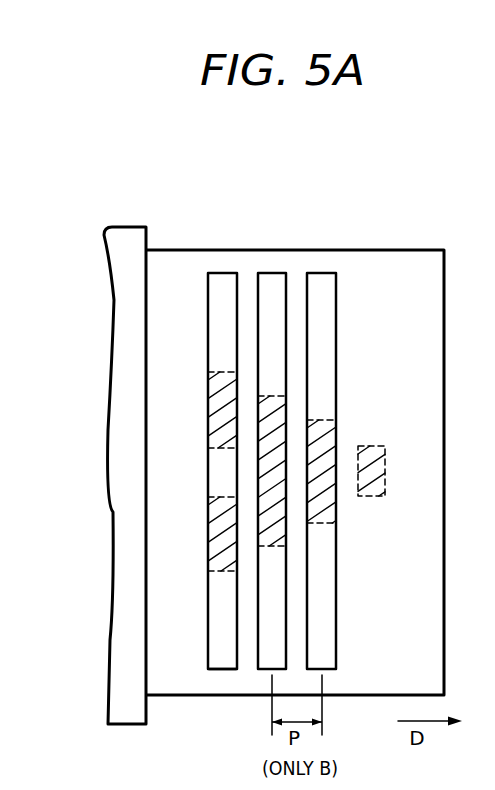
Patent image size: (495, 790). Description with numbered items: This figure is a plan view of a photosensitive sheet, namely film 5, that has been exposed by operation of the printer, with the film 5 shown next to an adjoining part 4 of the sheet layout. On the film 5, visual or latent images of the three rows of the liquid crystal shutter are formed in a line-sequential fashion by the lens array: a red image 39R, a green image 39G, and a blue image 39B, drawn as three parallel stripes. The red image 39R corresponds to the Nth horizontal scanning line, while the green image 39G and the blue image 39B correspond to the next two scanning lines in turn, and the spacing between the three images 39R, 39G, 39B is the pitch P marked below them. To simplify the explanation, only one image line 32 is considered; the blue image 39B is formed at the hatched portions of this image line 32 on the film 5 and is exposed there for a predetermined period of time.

The substrate / light shielding block 4 is at (122, 227).
The film 5 is at (160, 250).
The blue image 39B is at (211, 273).
The green image 39G is at (263, 273).
The red image 39R is at (319, 273).
The image line 32 is at (230, 669).